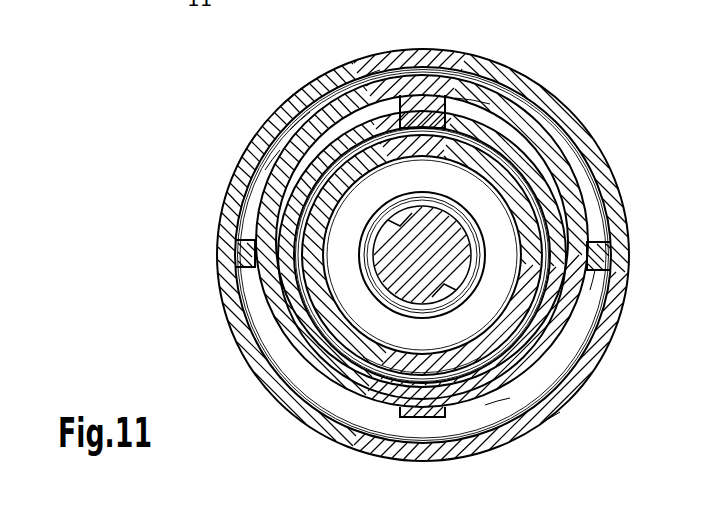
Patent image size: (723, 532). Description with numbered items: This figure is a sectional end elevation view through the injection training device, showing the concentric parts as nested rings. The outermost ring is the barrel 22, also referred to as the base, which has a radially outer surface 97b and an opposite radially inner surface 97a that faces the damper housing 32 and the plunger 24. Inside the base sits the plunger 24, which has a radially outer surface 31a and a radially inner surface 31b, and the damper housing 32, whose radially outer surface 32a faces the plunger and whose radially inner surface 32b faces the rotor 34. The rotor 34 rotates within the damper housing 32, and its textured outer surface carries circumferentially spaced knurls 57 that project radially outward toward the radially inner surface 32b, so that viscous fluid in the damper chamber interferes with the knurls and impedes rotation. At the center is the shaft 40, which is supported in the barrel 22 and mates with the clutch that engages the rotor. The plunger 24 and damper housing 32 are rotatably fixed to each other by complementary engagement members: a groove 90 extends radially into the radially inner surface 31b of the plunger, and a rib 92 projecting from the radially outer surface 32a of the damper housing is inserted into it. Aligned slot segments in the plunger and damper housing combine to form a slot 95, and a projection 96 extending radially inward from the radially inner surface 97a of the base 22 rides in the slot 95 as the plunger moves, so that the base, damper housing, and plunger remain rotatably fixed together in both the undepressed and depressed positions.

The barrel 22 is at (522, 77).
The plunger 24 is at (578, 142).
The radially outer surface 31a is at (300, 126).
The radially inner surface 31b is at (272, 165).
The damper housing 32 is at (500, 370).
The radially outer surface 32a is at (287, 362).
The radially inner surface 32b is at (330, 318).
The rotor 34 is at (547, 393).
The shaft 40 is at (487, 250).
The knurls 57 is at (368, 76).
The groove 90 is at (418, 93).
The rib 92 is at (462, 103).
The slot 95 is at (606, 250).
The projection 96 is at (600, 270).
The radially inner surface 97a is at (497, 412).
The radially outer surface 97b is at (543, 420).